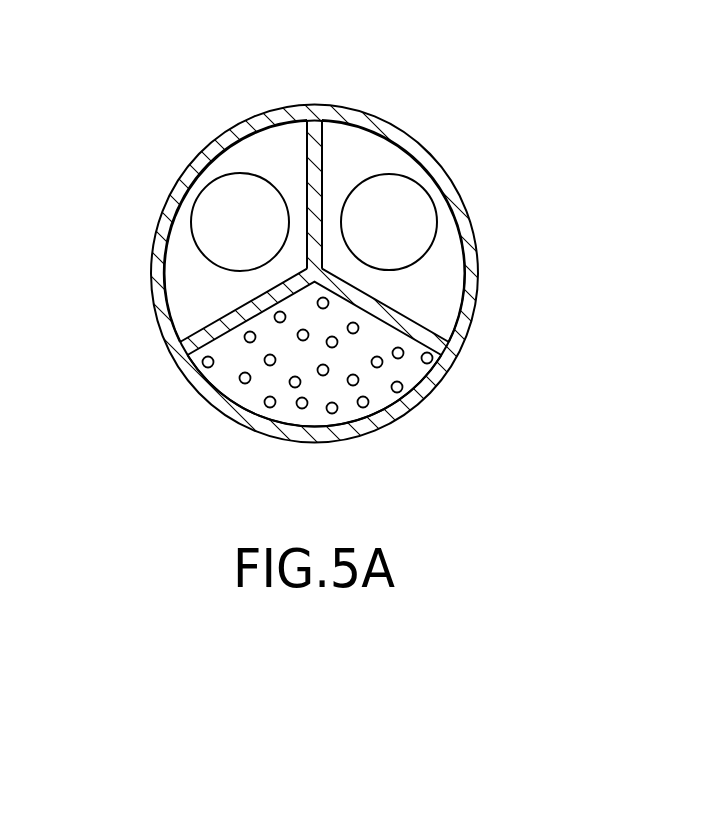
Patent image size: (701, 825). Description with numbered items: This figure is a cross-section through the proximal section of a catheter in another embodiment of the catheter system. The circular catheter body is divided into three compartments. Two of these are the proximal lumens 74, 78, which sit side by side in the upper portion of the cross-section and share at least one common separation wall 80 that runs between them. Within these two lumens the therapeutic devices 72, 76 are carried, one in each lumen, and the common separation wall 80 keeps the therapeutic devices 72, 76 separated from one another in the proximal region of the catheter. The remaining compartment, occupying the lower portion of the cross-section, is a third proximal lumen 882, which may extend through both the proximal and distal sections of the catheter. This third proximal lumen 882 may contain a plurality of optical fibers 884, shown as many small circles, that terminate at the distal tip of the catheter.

The therapeutic device 72 is at (233, 227).
The proximal lumen 74 is at (272, 155).
The therapeutic device 76 is at (400, 228).
The proximal lumen 78 is at (368, 157).
The common separation wall 80 is at (320, 132).
The third proximal lumen 882 is at (420, 372).
The optical fibers 884 is at (327, 308).